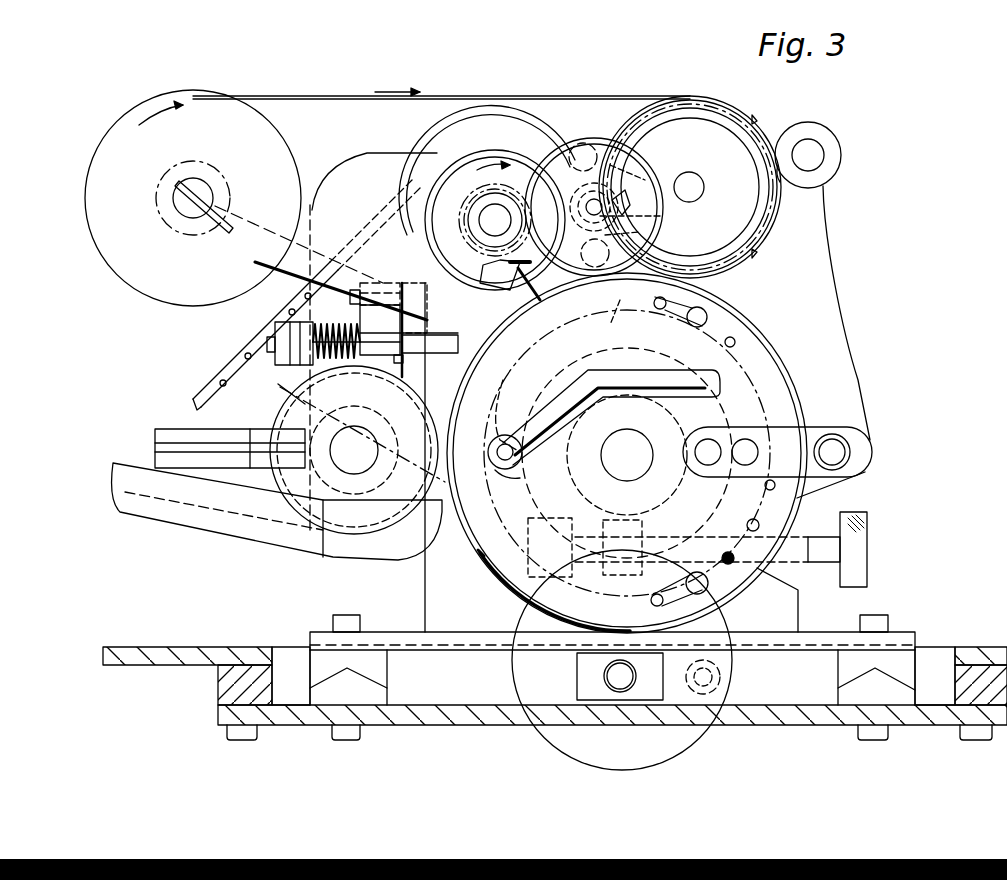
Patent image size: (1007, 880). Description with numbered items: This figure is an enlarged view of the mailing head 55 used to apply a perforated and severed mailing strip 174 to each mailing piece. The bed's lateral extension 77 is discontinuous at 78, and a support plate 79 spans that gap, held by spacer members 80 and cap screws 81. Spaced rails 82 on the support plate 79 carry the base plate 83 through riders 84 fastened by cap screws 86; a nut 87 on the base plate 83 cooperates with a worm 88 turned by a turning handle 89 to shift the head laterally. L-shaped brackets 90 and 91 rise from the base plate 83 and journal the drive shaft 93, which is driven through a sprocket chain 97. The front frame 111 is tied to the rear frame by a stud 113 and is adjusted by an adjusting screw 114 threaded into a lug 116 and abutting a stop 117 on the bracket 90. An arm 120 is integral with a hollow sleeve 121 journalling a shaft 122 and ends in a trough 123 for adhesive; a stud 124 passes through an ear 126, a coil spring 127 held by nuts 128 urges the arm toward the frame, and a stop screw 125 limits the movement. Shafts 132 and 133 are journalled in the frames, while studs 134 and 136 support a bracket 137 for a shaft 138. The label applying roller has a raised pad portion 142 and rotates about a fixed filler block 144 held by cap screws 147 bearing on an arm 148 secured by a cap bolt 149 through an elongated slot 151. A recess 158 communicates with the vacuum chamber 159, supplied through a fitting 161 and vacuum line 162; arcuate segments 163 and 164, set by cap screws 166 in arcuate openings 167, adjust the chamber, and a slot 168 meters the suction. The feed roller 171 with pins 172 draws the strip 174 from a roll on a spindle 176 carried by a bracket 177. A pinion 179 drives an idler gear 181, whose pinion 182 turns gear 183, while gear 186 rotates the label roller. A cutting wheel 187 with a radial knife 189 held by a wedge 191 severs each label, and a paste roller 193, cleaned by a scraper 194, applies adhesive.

The mailing head 55 is at (480, 58).
The lateral extension 77 is at (150, 650).
The discontinuous portion 78 is at (276, 650).
The support plate 79 is at (405, 724).
The spacer member 80 is at (220, 684).
The cap screw 81 is at (232, 732).
The spaced rail 82 is at (388, 692).
The base plate 83 is at (820, 632).
The rider 84 is at (380, 666).
The cap screw 86 is at (360, 618).
The nut 87 is at (578, 672).
The worm 88 is at (638, 672).
The turning handle 89 is at (722, 672).
The L-shaped bracket 90 is at (432, 566).
The L-shaped bracket 91 is at (575, 352).
The shaft 93 is at (495, 210).
The sprocket chain 97 is at (232, 375).
The front frame 111 is at (845, 232).
The stud 113 is at (815, 150).
The adjusting screw 114 is at (866, 518).
The lug 116 is at (648, 518).
The stop 117 is at (545, 520).
The arm 120 is at (347, 162).
The hollow sleeve 121 is at (383, 482).
The shaft 122 is at (356, 430).
The trough 123 is at (193, 520).
The stud 124 is at (438, 340).
The stop screw 125 is at (362, 284).
The ear 126 is at (417, 359).
The coil spring 127 is at (316, 328).
The nut 128 is at (280, 330).
The shaft 132 is at (628, 466).
The shaft 133 is at (689, 182).
The stud 134 is at (585, 135).
The stud 136 is at (645, 240).
The bracket 137 is at (648, 155).
The shaft 138 is at (660, 216).
The raised pad portion 142 is at (485, 565).
The filler block 144 is at (686, 356).
The cap screw 147 is at (740, 440).
The arm 148 is at (805, 426).
The cap bolt 149 is at (842, 440).
The elongated slot 151 is at (846, 458).
The recess 158 is at (500, 446).
The chamber 159 is at (512, 360).
The fitting 161 is at (518, 482).
The vacuum pressure line 162 is at (610, 440).
The arcuate segment 163 is at (762, 340).
The arcuate segment 164 is at (792, 494).
The cap screw 166 is at (712, 304).
The arcuate opening 167 is at (708, 318).
The slot 168 is at (625, 317).
The feed roller 171 is at (765, 228).
The perforation engaging pin 172 is at (757, 118).
The mailing strip 174 is at (292, 97).
The spindle 176 is at (205, 190).
The bracket 177 is at (316, 290).
The pinion 179 is at (480, 222).
The idler gear 181 is at (553, 165).
The pinion 182 is at (632, 178).
The gear 183 is at (765, 204).
The gear 186 is at (785, 364).
The cutting wheel 187 is at (418, 178).
The radial knife 189 is at (520, 272).
The wedge 191 is at (486, 278).
The paste roller 193 is at (282, 408).
The scraper 194 is at (193, 432).